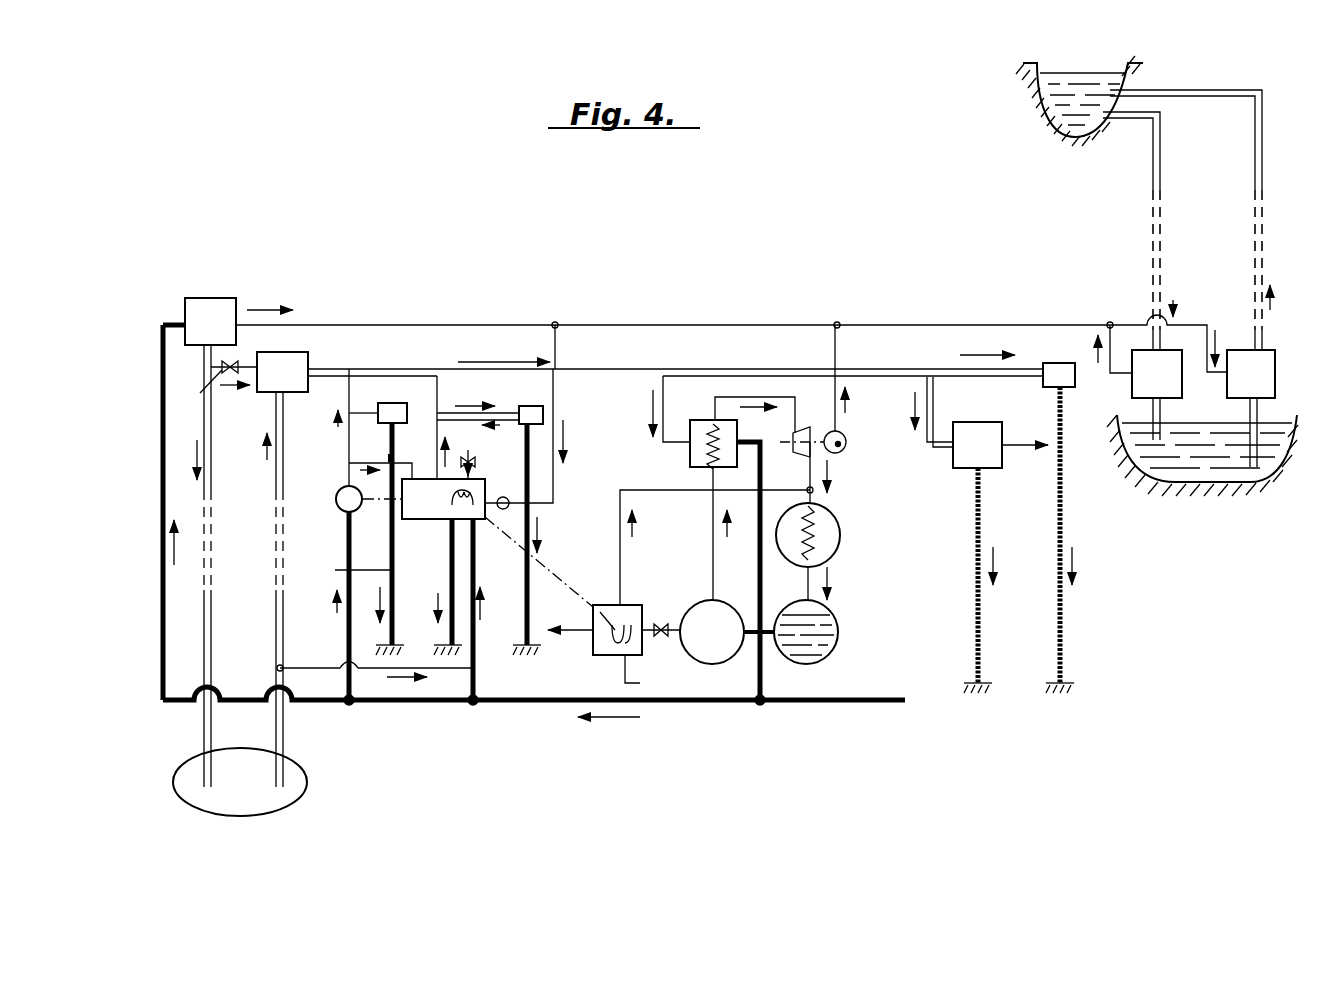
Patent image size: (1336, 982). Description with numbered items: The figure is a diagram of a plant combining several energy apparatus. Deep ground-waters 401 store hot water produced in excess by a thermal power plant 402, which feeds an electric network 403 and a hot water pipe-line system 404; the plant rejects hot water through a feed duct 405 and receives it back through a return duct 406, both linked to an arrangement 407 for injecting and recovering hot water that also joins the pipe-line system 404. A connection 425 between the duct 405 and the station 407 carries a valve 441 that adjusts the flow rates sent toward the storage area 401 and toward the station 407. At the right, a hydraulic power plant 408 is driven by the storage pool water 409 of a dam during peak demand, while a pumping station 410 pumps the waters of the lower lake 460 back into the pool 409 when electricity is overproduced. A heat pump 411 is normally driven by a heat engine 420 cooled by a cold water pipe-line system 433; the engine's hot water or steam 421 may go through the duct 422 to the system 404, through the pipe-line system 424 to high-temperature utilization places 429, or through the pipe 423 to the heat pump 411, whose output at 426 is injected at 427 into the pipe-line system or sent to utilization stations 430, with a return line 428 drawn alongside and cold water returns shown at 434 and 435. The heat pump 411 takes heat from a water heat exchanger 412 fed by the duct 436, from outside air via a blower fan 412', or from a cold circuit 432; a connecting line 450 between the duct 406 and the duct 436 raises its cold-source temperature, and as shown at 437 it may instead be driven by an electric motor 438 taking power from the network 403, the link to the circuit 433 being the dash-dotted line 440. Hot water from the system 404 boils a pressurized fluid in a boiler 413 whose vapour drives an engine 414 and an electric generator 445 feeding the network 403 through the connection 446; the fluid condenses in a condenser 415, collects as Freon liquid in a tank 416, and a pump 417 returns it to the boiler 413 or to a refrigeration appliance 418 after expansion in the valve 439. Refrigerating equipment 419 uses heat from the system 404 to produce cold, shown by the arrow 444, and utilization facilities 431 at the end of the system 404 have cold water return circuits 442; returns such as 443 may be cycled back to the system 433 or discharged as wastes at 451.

The ground-waters 401 is at (297, 765).
The thermal power plant 402 is at (213, 321).
The electric network 403 is at (335, 324).
The hot water pipe-line system 404 is at (342, 367).
The feed duct 405 is at (215, 422).
The return duct 406 is at (278, 485).
The arrangement for injecting and recovering hot waters 407 is at (284, 372).
The hydraulic power plant 408 is at (1142, 276).
The storage pool water 409 is at (1082, 90).
The pumping station 410 is at (1193, 278).
The heat pump 411 is at (443, 499).
The water heat exchanger 412 is at (432, 576).
The blower fan 412' is at (500, 468).
The boiler 413 is at (730, 438).
The engine 414 is at (808, 428).
The condenser 415 is at (826, 535).
The tank 416 is at (826, 625).
The pump 417 is at (720, 565).
The refrigeration appliance 418 is at (612, 658).
The refrigerating equipment 419 is at (960, 422).
The heat engine 420 is at (345, 512).
The hot water or steam 421 is at (338, 495).
The duct 422 is at (350, 400).
The pipe 423 is at (350, 463).
The pipe-line system 424 is at (335, 416).
The connection 425 is at (245, 363).
The outlet duct 426 is at (478, 395).
The injection point 427 is at (400, 410).
The return line 428 is at (488, 421).
The utilization places 429 is at (437, 372).
The utilization stations 430 is at (556, 395).
The utilization facilities 431 is at (1058, 365).
The cold circuit 432 is at (656, 675).
The cold water pipe-line system 433 is at (690, 702).
The cold water return 434 is at (343, 534).
The cold water return 435 is at (525, 598).
The duct 436 is at (458, 592).
The drive connection 437 is at (562, 478).
The electric motor 438 is at (503, 510).
The expansion valve 439 is at (665, 620).
The dash-dotted line 440 is at (573, 592).
The valve 441 is at (195, 394).
The cold water return circuit 442 is at (1055, 605).
The cold water return 443 is at (975, 560).
The cold production arrow 444 is at (1018, 447).
The electric generator 445 is at (840, 452).
The connection 446 is at (836, 350).
The connecting line 450 is at (305, 663).
The waste discharge 451 is at (538, 702).
The lower lake 460 is at (1182, 455).